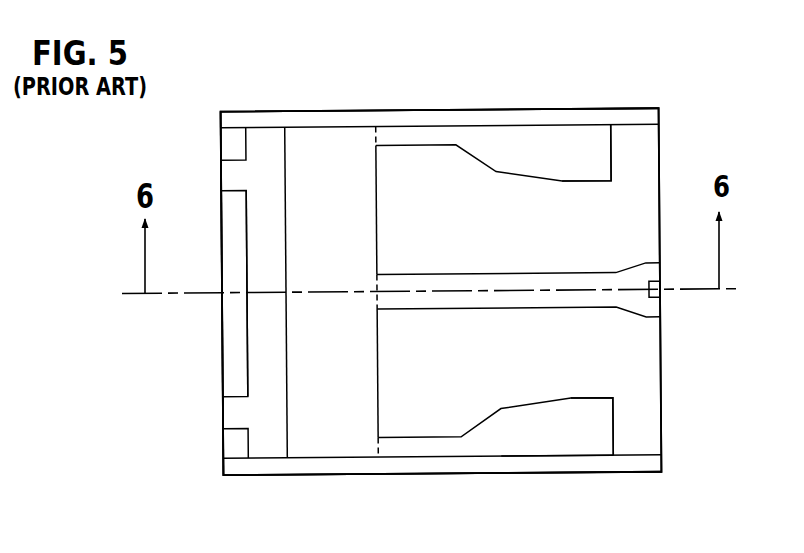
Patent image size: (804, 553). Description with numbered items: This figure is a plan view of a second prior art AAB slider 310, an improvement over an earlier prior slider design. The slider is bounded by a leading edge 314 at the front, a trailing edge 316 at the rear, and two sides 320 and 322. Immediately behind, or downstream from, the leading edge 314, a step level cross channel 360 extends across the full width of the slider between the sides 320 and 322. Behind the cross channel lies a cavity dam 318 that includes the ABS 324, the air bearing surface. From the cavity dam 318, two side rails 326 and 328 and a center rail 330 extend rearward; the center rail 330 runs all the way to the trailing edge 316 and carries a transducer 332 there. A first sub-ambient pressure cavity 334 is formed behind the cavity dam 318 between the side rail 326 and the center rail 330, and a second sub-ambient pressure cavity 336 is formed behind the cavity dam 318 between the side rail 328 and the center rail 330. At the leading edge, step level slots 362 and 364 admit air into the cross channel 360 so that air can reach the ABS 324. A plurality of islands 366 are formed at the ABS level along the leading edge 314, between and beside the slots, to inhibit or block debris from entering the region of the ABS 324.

The AAB slider 310 is at (136, 157).
The leading edge 314 is at (226, 467).
The trailing edge 316 is at (661, 157).
The cavity dam 318 is at (287, 308).
The side 320 is at (432, 122).
The side 322 is at (310, 465).
The ABS 324 is at (326, 133).
The side rail 326 is at (584, 132).
The side rail 328 is at (547, 456).
The center rail 330 is at (598, 307).
The transducer 332 is at (661, 290).
The first sub-ambient pressure cavity 334 is at (473, 179).
The second sub-ambient pressure cavity 336 is at (458, 401).
The step level cross channel 360 is at (262, 356).
The step level slot 362 is at (222, 177).
The step level slot 364 is at (235, 409).
The island 366 is at (222, 150).